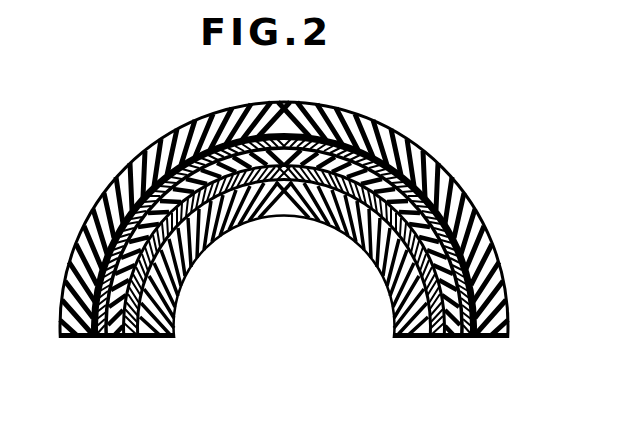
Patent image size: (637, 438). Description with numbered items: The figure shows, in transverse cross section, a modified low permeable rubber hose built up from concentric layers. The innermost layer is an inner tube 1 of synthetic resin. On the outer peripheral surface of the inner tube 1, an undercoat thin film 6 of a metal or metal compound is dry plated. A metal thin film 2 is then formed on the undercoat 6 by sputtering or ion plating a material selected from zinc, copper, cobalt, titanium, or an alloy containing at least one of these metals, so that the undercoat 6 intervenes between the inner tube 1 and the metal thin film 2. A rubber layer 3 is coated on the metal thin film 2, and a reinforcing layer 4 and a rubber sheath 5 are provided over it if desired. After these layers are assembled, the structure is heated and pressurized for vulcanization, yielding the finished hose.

The inner tube 1 is at (284, 309).
The metal thin film 2 is at (284, 302).
The rubber layer 3 is at (281, 293).
The reinforcing layer 4 is at (290, 289).
The rubber sheath 5 is at (279, 270).
The undercoat thin film 6 is at (283, 309).